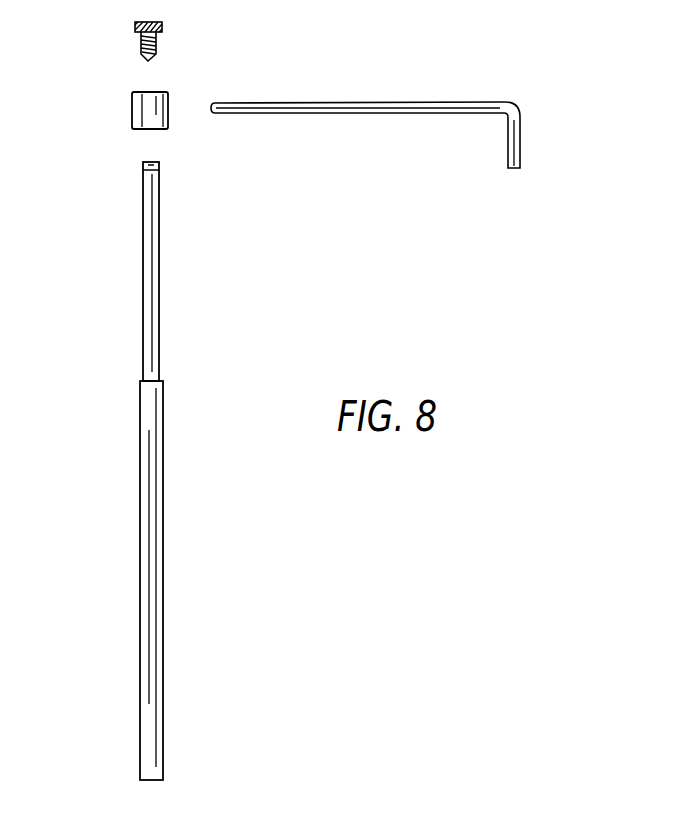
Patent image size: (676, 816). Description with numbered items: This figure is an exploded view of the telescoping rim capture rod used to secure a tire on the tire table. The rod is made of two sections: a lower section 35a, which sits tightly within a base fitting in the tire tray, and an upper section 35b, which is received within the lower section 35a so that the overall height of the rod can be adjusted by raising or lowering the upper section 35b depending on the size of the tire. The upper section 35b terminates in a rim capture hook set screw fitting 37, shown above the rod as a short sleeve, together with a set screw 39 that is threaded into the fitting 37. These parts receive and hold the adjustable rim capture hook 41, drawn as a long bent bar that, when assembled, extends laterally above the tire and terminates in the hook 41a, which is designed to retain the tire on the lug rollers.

The lower section 35a is at (156, 562).
The upper section 35b is at (153, 256).
The rim capture hook set screw fitting 37 is at (132, 113).
The set screw 39 is at (164, 29).
The adjustable rim capture hook 41 is at (381, 102).
The hook 41a is at (520, 137).